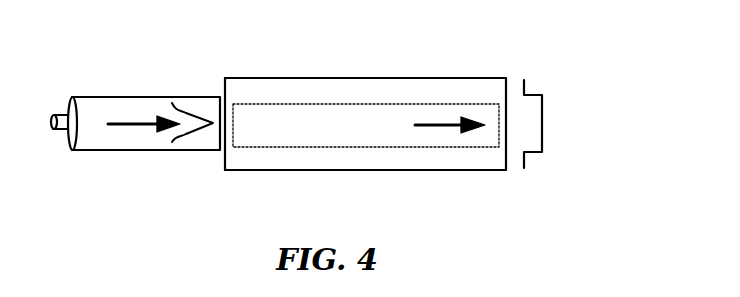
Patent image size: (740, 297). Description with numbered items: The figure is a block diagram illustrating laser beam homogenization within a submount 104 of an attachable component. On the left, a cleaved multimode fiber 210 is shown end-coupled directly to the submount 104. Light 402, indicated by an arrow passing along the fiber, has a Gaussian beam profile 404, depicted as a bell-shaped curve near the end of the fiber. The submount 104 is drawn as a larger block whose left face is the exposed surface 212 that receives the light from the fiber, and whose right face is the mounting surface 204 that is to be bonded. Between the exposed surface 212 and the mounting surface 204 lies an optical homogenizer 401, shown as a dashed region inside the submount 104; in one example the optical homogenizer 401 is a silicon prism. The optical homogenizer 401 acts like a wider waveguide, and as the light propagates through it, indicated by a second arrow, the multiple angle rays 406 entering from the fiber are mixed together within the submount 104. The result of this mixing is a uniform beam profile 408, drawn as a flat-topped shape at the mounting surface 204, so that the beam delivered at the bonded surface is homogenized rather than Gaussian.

The submount 104 is at (355, 172).
The mounting surface 204 is at (507, 148).
The cleaved multimode fiber 210 is at (95, 148).
The exposed surface 212 is at (223, 86).
The optical homogenizer 401 is at (325, 115).
The light 402 is at (118, 122).
The Gaussian beam profile 404 is at (187, 112).
The multiple angle rays 406 is at (438, 120).
The uniform beam profile 408 is at (535, 97).